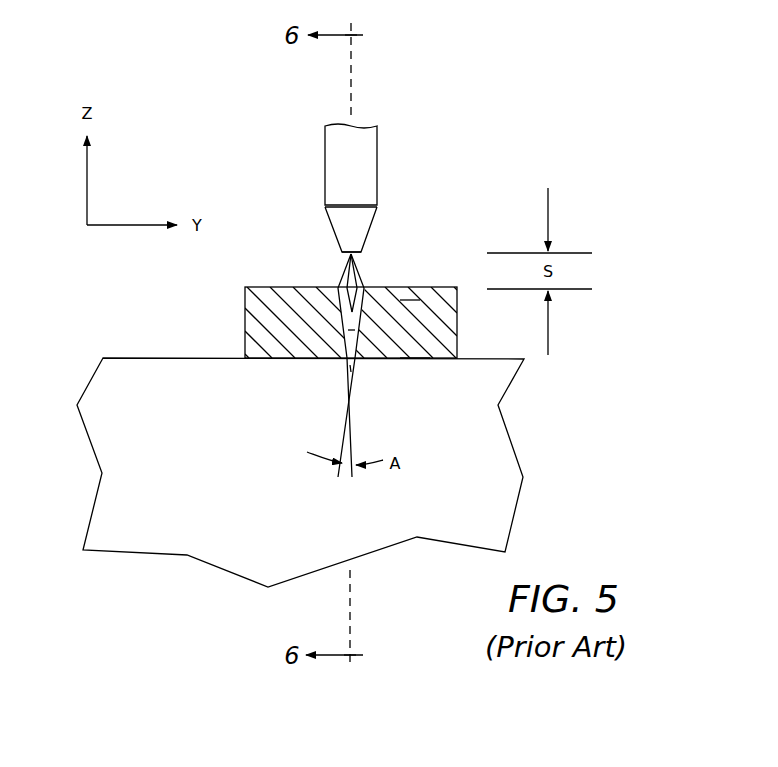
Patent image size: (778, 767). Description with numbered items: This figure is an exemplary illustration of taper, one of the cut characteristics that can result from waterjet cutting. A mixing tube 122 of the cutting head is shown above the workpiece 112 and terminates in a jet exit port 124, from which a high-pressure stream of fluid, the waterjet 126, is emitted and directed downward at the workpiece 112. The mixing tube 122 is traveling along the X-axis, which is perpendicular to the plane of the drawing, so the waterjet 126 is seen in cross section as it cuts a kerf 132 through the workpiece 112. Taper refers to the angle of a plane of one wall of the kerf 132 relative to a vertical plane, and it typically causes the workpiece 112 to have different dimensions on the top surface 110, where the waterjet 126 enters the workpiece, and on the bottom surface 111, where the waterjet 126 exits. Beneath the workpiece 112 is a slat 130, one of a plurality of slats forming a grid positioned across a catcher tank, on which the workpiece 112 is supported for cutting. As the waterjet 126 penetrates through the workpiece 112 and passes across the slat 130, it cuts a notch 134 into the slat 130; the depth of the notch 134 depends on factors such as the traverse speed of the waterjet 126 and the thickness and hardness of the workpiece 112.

The top surface 110 is at (400, 287).
The bottom surface 111 is at (416, 361).
The workpiece 112 is at (410, 302).
The mixing tube 122 is at (335, 137).
The jet exit port 124 is at (364, 257).
The waterjet 126 is at (343, 272).
The slat 130 is at (167, 380).
The kerf 132 is at (350, 328).
The notch 134 is at (348, 365).